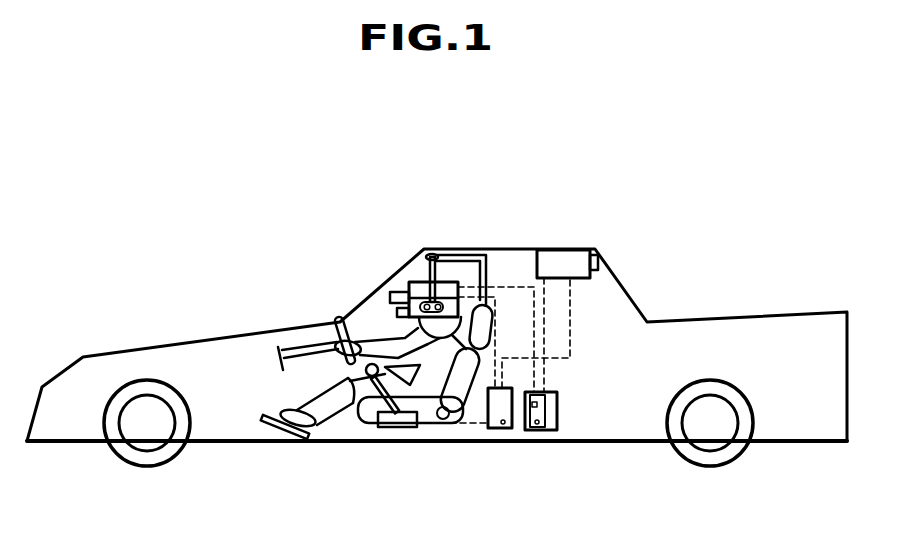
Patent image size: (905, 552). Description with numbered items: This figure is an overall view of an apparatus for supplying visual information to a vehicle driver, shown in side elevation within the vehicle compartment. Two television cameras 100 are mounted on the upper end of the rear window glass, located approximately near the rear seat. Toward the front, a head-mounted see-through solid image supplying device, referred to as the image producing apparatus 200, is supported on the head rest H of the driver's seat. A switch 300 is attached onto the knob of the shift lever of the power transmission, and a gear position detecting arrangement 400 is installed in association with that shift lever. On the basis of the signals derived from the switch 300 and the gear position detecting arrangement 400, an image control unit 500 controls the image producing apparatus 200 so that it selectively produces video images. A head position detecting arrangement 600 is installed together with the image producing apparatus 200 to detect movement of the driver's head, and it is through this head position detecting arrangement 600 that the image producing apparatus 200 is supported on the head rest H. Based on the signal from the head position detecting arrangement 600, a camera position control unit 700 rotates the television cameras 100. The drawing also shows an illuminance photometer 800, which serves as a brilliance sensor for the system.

The television camera 100 is at (562, 262).
The image producing apparatus 200 is at (388, 293).
The switch 300 is at (347, 385).
The gear position detecting arrangement 400 is at (398, 430).
The image control unit 500 is at (508, 430).
The head position detecting arrangement 600 is at (418, 280).
The camera position control unit 700 is at (555, 432).
The illuminance photometer 800 is at (392, 310).
The head rest H is at (505, 305).